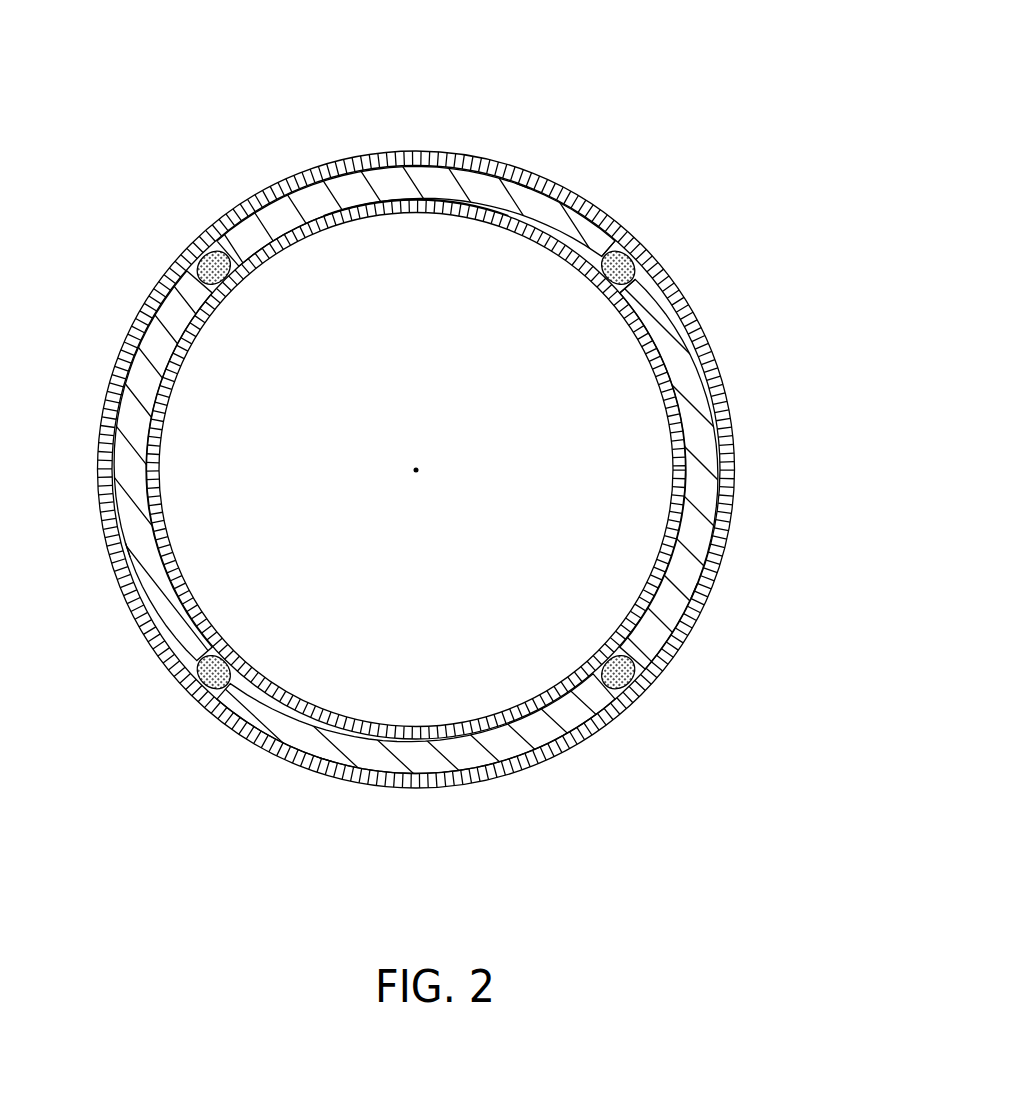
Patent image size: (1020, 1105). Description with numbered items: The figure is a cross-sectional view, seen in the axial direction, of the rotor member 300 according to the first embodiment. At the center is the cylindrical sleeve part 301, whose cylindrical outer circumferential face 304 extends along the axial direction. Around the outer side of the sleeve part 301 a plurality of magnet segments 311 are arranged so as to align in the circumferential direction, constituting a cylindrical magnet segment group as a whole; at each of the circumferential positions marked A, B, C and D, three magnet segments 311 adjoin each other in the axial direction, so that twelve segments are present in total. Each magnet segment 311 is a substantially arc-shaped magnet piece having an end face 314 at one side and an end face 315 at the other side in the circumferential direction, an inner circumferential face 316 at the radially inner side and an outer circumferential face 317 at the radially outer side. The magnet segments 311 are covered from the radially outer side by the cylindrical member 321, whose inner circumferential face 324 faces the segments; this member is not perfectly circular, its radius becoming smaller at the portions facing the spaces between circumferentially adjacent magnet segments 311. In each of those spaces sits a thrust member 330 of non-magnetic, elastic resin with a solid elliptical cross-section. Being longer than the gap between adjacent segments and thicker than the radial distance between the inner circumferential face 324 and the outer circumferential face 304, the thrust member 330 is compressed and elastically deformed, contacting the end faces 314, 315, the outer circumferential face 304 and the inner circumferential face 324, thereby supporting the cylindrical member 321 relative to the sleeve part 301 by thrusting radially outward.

The rotor member 300 is at (667, 97).
The sleeve part 301 is at (655, 377).
The outer circumferential face 304 is at (552, 743).
The magnet segment 311 is at (518, 185).
The end face 314 is at (618, 260).
The end face 315 is at (213, 258).
The inner circumferential face 316 is at (413, 200).
The outer circumferential face 317 is at (452, 164).
The cylindrical member 321 is at (700, 328).
The inner circumferential face 324 is at (710, 526).
The thrust member 330 is at (628, 270).